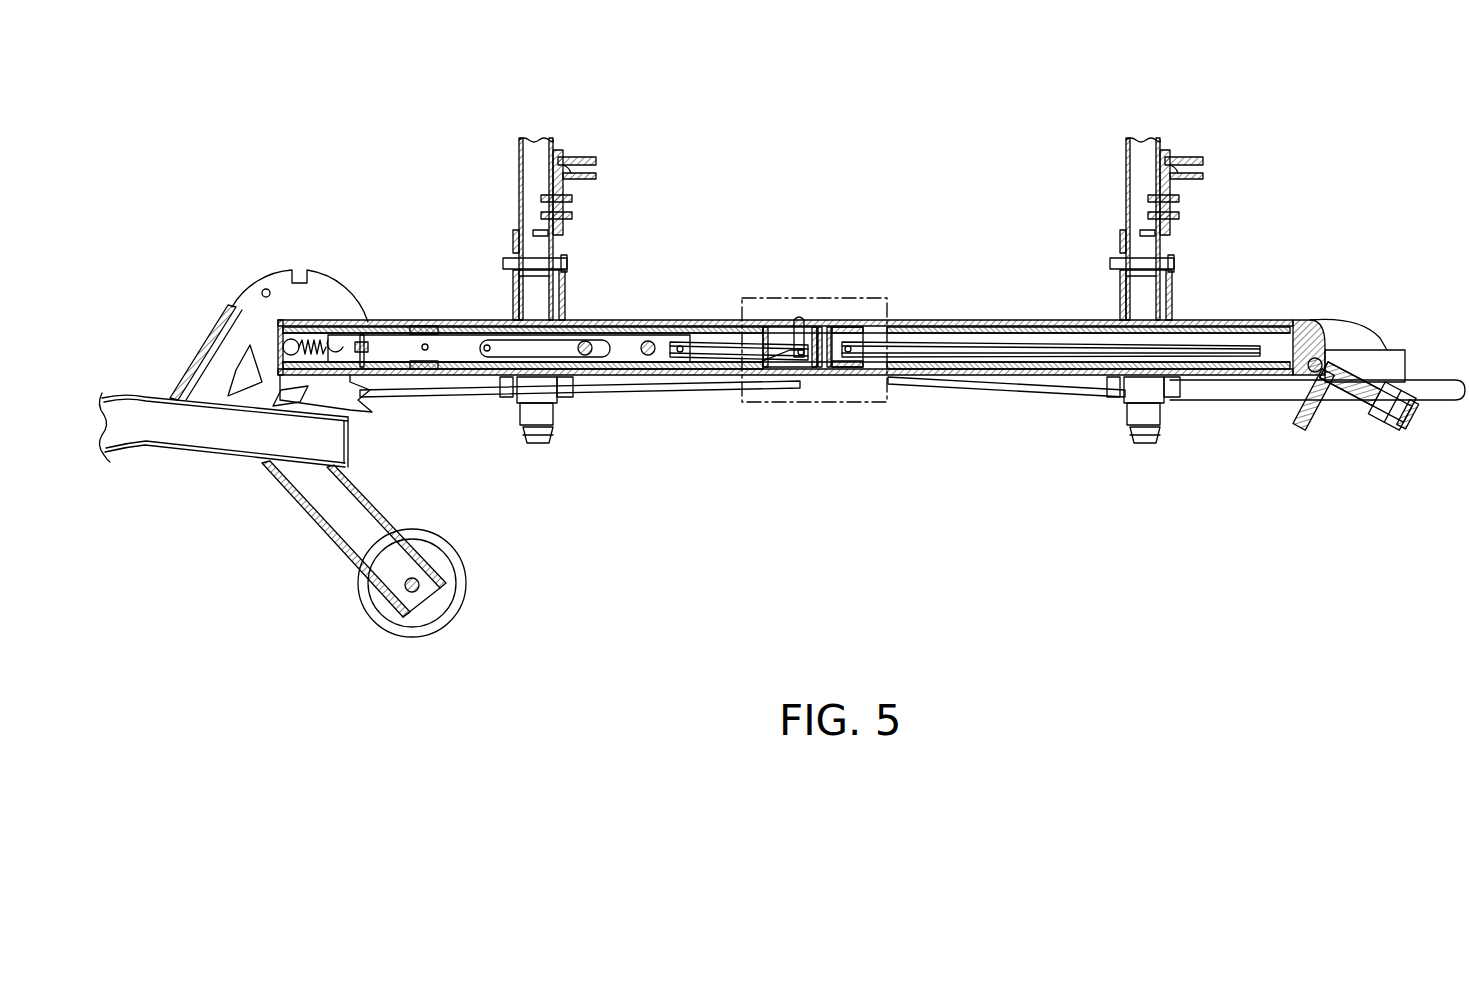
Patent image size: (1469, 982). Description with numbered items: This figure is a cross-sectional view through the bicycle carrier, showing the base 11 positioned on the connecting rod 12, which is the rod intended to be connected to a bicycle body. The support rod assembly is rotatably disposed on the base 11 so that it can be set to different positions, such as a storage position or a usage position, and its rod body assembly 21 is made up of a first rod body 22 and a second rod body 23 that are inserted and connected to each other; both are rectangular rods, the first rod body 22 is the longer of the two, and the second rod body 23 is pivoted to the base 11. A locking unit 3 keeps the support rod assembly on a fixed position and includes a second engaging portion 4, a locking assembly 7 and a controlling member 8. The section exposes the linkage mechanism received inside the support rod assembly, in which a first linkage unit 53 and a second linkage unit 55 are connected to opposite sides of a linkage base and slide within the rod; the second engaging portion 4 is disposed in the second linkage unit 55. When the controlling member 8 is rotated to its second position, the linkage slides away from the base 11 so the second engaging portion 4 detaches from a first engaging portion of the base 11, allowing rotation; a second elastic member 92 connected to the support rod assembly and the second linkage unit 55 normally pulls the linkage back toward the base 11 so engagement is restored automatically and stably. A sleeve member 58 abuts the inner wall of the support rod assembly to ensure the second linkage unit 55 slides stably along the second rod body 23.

The locking unit 3 is at (1333, 300).
The second engaging portion 4 is at (372, 348).
The locking assembly 7 is at (1306, 404).
The controlling member 8 is at (1384, 443).
The base 11 is at (262, 313).
The connecting rod 12 is at (143, 397).
The rod body assembly 21 is at (785, 431).
The first rod body 22 is at (957, 380).
The second rod body 23 is at (572, 415).
The first linkage unit 53 is at (992, 320).
The second linkage unit 55 is at (711, 318).
The sleeve member 58 is at (430, 372).
The second elastic member 92 is at (312, 344).